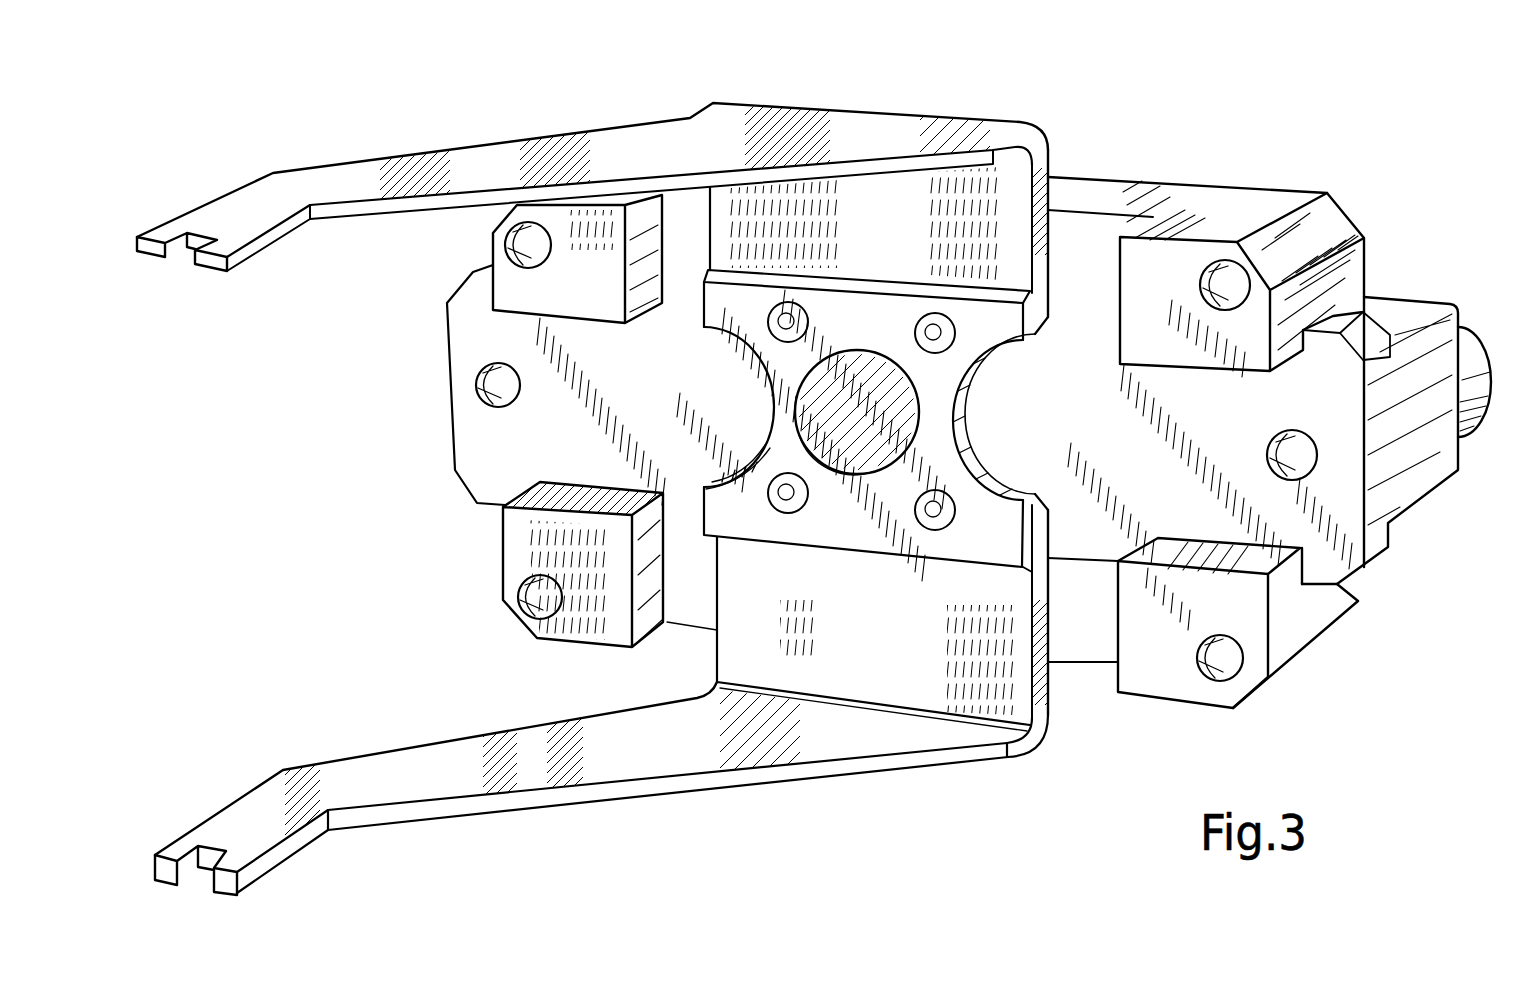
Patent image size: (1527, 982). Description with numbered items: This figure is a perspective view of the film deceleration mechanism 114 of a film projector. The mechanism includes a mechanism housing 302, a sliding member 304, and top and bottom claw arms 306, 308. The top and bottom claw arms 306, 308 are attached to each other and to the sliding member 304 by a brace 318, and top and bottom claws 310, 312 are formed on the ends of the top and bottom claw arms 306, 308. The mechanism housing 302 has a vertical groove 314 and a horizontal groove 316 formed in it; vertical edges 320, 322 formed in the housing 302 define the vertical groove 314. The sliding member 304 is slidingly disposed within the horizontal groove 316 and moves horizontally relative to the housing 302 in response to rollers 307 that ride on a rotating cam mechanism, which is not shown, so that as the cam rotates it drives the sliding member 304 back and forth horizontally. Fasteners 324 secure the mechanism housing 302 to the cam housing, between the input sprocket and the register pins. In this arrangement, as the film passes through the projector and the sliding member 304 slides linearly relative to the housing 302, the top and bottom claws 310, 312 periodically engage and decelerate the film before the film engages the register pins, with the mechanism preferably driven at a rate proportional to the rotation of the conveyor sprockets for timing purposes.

The film deceleration mechanism 114 is at (1325, 142).
The mechanism housing 302 is at (1102, 170).
The sliding member 304 is at (1413, 292).
The top claw arm 306 is at (413, 150).
The rollers 307 is at (1482, 337).
The bottom claw arm 308 is at (500, 815).
The top claw 310 is at (152, 265).
The bottom claw 312 is at (160, 883).
The vertical groove 314 is at (1063, 240).
The horizontal groove 316 is at (1318, 572).
The brace 318 is at (908, 240).
The vertical edge 320 is at (1120, 262).
The vertical edge 322 is at (653, 292).
The fasteners 324 is at (512, 240).